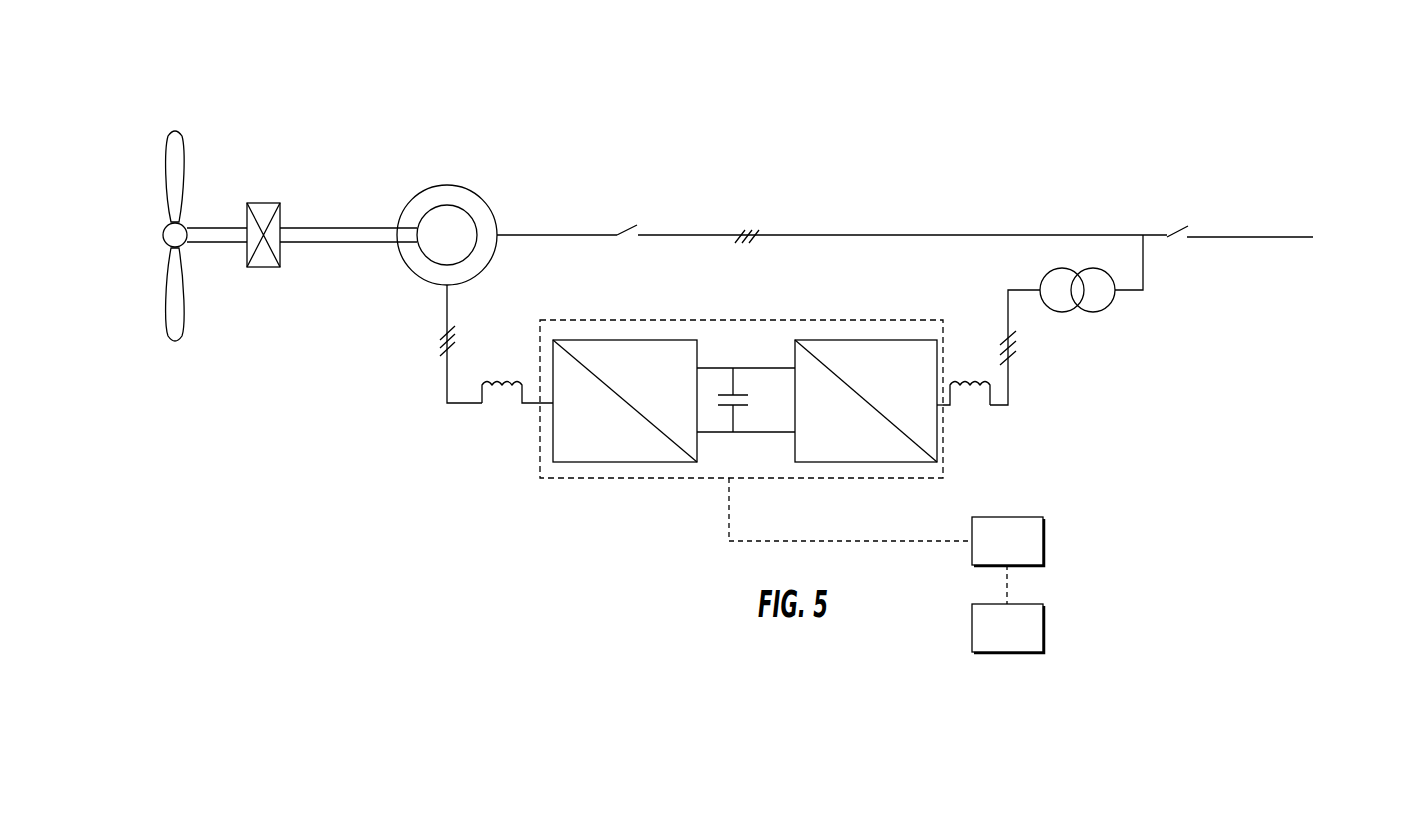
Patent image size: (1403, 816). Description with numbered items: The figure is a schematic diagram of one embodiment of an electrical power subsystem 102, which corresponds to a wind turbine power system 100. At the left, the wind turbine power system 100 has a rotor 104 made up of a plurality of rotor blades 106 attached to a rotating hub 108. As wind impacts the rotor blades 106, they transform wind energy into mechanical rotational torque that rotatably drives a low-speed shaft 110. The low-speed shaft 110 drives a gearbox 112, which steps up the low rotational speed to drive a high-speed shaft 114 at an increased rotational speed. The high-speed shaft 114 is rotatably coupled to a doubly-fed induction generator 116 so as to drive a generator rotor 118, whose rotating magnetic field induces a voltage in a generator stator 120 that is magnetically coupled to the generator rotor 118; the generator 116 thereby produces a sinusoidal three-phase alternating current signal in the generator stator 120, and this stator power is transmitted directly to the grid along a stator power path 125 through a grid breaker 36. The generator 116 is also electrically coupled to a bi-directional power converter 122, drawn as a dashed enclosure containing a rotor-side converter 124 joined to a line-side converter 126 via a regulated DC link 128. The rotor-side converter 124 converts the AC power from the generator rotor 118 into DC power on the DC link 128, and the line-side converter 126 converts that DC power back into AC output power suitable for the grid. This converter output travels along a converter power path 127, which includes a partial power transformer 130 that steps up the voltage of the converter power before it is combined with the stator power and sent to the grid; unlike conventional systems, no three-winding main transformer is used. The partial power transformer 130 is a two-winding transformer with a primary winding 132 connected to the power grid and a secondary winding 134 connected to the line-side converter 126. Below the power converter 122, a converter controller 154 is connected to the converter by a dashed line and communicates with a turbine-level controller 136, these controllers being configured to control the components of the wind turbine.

The wind turbine power system 100 is at (195, 96).
The electrical power subsystem 102 is at (1074, 116).
The rotor 104 is at (150, 227).
The rotor blades 106 is at (177, 165).
The rotating hub 108 is at (163, 250).
The low-speed shaft 110 is at (205, 241).
The gearbox 112 is at (262, 203).
The high-speed shaft 114 is at (332, 242).
The doubly-fed induction generator 116 is at (473, 182).
The generator rotor 118 is at (420, 258).
The generator stator 120 is at (410, 200).
The bi-directional power converter 122 is at (682, 482).
The rotor-side converter 124 is at (618, 340).
The stator power path 125 is at (805, 233).
The line-side converter 126 is at (857, 340).
The converter power path 127 is at (1012, 376).
The regulated DC link 128 is at (740, 362).
The partial power transformer 130 is at (1097, 318).
The primary winding 132 is at (1113, 278).
The secondary winding 134 is at (1048, 273).
The grid breaker 36 is at (1194, 226).
The converter controller 154 is at (1008, 541).
The turbine-level controller 136 is at (1008, 628).